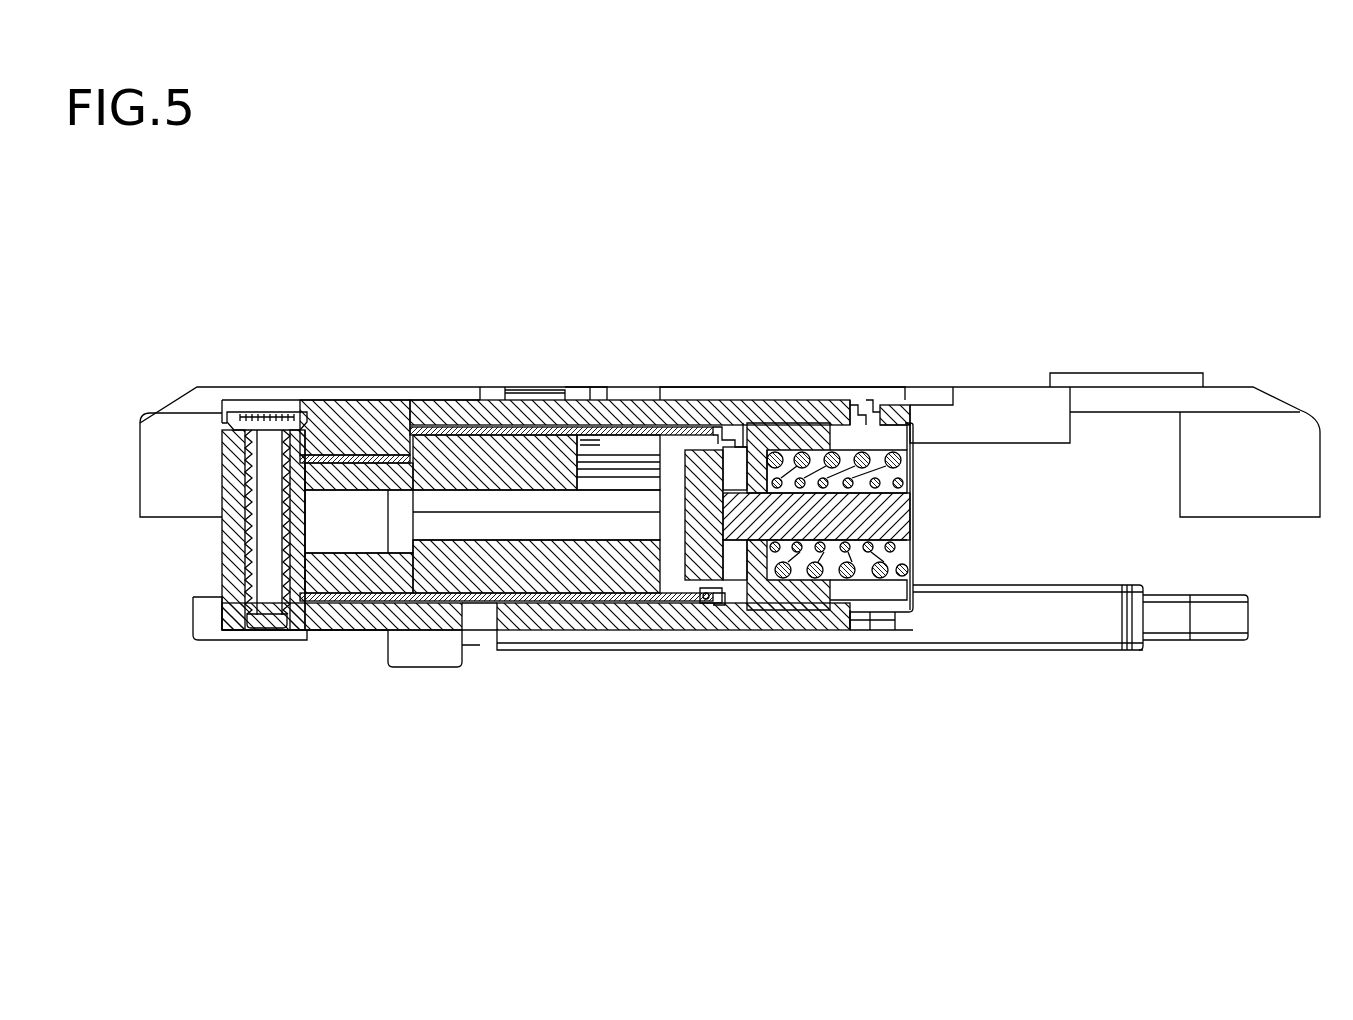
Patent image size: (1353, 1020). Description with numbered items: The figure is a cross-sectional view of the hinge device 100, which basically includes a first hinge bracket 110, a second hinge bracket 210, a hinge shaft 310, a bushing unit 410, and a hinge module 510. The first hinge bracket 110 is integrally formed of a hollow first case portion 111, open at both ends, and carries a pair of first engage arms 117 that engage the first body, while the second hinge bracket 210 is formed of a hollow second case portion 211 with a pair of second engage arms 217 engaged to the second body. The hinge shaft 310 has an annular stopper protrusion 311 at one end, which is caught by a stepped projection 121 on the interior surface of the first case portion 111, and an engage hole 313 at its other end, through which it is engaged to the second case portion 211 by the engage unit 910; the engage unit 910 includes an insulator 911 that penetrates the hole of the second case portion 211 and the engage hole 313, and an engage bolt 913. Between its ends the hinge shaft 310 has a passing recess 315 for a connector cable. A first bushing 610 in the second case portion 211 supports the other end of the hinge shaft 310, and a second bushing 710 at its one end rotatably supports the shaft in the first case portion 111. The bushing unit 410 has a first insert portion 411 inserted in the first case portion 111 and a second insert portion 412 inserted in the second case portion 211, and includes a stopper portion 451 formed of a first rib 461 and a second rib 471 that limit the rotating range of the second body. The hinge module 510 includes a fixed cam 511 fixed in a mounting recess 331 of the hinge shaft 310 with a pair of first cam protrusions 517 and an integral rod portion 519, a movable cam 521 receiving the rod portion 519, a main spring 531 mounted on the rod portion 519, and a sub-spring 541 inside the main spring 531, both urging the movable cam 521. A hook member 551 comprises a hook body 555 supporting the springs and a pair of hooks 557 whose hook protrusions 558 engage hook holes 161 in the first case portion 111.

The hinge device 100 is at (645, 257).
The first hinge bracket 110 is at (606, 634).
The first case portion 111 is at (768, 622).
The first engage arms 117 is at (404, 388).
The stepped projection 121 is at (687, 418).
The hook holes 161 is at (862, 628).
The second hinge bracket 210 is at (345, 641).
The second case portion 211 is at (370, 632).
The second engage arms 217 is at (811, 646).
The hinge shaft 310 is at (528, 603).
The stopper protrusion 311 is at (735, 478).
The engage hole 313 is at (240, 527).
The passing recess 315 is at (327, 545).
The mounting recess 331 is at (698, 592).
The bushing unit 410 is at (533, 408).
The first insert portion 411 is at (609, 405).
The second insert portion 412 is at (421, 428).
The stopper portion 451 is at (497, 634).
The first rib 461 is at (471, 407).
The second rib 471 is at (477, 648).
The hinge module 510 is at (919, 532).
The fixed cam 511 is at (703, 602).
The first cam protrusions 517 is at (762, 438).
The rod portion 519 is at (905, 514).
The movable cam 521 is at (785, 612).
The main spring 531 is at (852, 475).
The sub-spring 541 is at (813, 484).
The hook member 551 is at (975, 320).
The hook body 555 is at (912, 430).
The hooks 557 is at (893, 425).
The hook protrusions 558 is at (873, 410).
The first bushing 610 is at (360, 458).
The second bushing 710 is at (716, 600).
The engage unit 910 is at (282, 411).
The insulator 911 is at (223, 470).
The engage bolt 913 is at (263, 437).